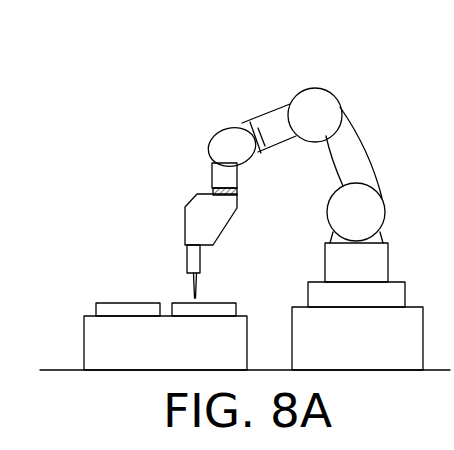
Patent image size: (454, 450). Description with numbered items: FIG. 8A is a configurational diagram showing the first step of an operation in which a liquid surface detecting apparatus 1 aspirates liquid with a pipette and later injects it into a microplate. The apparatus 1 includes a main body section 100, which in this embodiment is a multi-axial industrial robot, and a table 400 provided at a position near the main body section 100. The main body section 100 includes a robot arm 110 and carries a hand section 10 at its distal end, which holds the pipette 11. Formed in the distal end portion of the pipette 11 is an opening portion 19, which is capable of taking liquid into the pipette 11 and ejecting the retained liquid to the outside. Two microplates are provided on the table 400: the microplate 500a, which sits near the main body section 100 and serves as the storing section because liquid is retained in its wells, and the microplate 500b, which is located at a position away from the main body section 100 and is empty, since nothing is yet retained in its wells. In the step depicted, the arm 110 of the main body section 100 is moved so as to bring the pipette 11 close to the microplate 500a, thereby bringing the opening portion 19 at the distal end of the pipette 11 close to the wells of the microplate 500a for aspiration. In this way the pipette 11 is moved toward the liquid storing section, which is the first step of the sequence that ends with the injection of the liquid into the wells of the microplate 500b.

The liquid surface detecting apparatus 1 is at (209, 215).
The hand section 10 is at (178, 258).
The pipette 11 is at (200, 280).
The opening portion 19 is at (200, 298).
The main body section 100 is at (319, 198).
The robot arm 110 is at (362, 142).
The table 400 is at (93, 307).
The microplate 500a is at (222, 300).
The microplate 500b is at (138, 298).